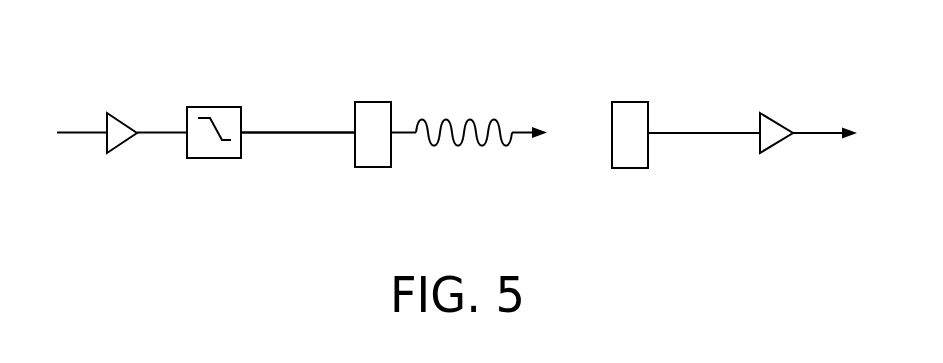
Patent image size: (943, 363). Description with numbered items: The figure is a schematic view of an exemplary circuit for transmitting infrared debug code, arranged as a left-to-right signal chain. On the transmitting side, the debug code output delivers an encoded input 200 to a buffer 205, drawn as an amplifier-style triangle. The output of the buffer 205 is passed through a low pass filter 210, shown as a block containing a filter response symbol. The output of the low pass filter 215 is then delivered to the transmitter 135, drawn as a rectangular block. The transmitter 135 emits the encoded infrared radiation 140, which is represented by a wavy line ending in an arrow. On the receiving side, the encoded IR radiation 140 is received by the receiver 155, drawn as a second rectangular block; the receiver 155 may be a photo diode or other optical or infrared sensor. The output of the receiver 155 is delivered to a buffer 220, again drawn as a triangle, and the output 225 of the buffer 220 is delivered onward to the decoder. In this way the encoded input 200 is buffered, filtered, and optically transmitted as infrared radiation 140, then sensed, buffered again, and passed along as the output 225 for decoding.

The encoded input 200 is at (72, 131).
The buffer 205 is at (122, 131).
The low pass filter 210 is at (222, 117).
The output of the low pass filter 215 is at (302, 130).
The transmitter 135 is at (369, 113).
The encoded infrared radiation 140 is at (472, 117).
The receiver 155 is at (628, 115).
The buffer 220 is at (768, 126).
The output of the buffer 225 is at (828, 132).